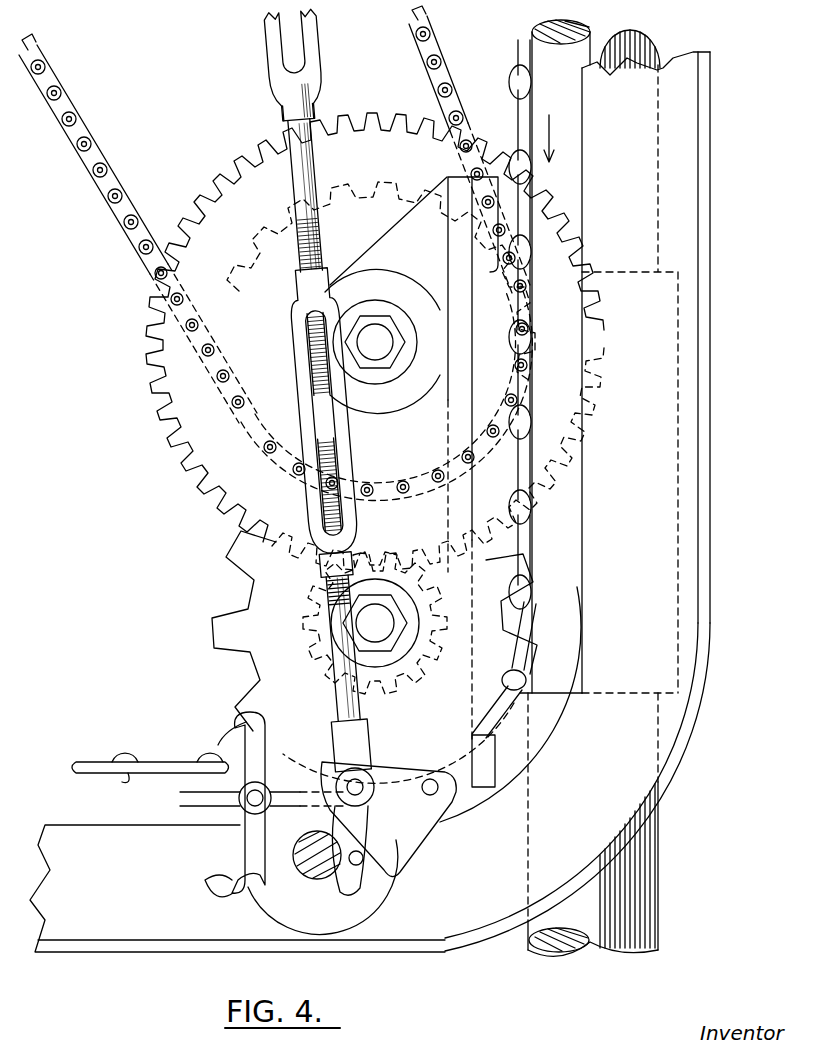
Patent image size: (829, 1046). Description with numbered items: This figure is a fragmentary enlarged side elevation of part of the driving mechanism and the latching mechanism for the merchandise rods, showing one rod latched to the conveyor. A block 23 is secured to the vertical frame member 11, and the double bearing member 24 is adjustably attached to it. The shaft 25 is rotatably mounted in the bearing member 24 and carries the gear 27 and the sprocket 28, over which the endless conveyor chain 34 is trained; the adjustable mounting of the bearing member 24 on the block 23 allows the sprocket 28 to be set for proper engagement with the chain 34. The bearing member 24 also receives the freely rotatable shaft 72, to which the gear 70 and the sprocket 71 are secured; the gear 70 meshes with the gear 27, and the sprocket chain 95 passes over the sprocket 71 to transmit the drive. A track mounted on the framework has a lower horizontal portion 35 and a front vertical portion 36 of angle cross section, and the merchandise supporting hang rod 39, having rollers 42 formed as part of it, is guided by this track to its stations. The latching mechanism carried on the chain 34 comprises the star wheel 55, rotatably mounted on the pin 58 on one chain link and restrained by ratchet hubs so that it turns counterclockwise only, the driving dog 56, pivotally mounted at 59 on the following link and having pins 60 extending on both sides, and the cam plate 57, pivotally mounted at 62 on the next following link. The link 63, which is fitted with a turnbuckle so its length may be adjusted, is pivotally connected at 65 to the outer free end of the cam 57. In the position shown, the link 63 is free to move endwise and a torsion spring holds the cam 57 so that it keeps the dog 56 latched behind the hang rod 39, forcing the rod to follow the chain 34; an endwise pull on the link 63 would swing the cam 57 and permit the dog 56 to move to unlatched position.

The frame member 11 is at (622, 893).
The block 23 is at (680, 440).
The double bearing member 24 is at (458, 440).
The shaft 25 is at (376, 632).
The gear 27 is at (312, 616).
The sprocket 28 is at (236, 632).
The endless conveyor chain 34 is at (102, 765).
The lower horizontal portion 35 is at (70, 870).
The front vertical portion 36 is at (680, 190).
The merchandise supporting hang rod 39 is at (320, 860).
The rollers 42 is at (300, 912).
The star wheel 55 is at (246, 726).
The driving dog 56 is at (352, 880).
The cam plate 57 is at (420, 822).
The pin 58 is at (236, 788).
The pivot 59 is at (325, 808).
The pins 60 is at (364, 862).
The pivot 62 is at (440, 795).
The link 63 is at (282, 84).
The pivotal connection 65 is at (290, 775).
The gear 70 is at (252, 192).
The sprocket 71 is at (260, 250).
The shaft 72 is at (385, 343).
The sprocket chain 95 is at (88, 142).